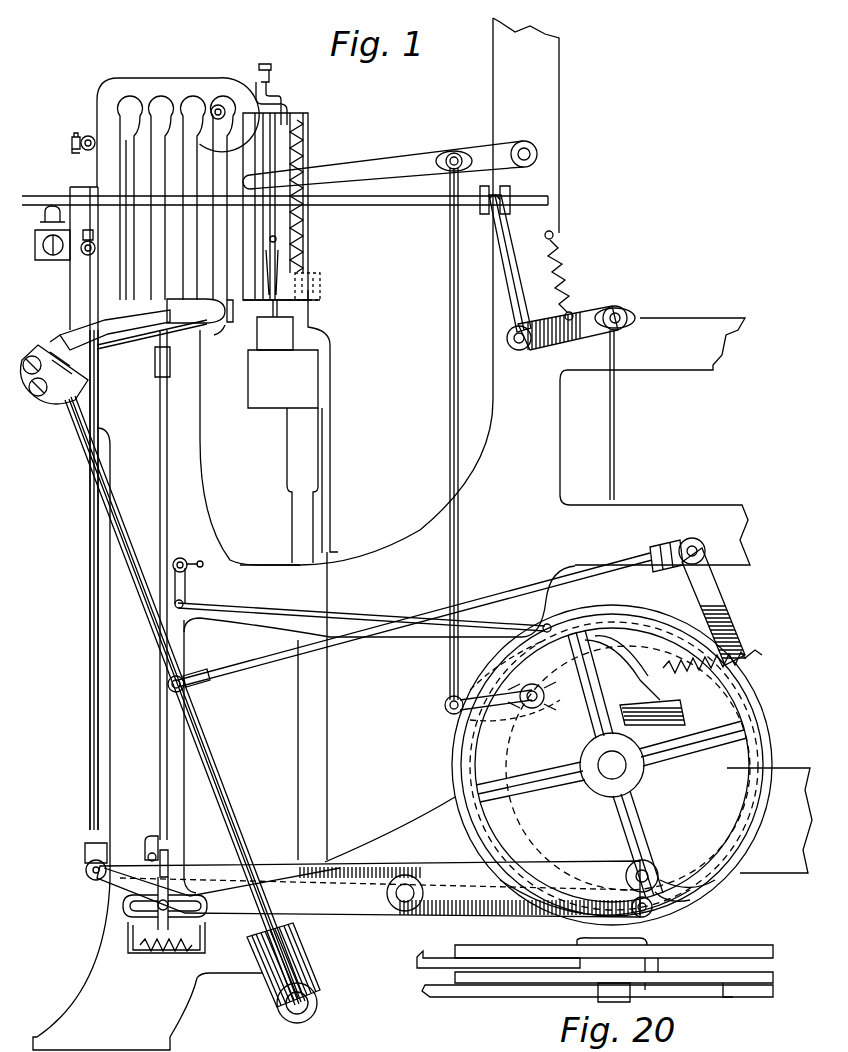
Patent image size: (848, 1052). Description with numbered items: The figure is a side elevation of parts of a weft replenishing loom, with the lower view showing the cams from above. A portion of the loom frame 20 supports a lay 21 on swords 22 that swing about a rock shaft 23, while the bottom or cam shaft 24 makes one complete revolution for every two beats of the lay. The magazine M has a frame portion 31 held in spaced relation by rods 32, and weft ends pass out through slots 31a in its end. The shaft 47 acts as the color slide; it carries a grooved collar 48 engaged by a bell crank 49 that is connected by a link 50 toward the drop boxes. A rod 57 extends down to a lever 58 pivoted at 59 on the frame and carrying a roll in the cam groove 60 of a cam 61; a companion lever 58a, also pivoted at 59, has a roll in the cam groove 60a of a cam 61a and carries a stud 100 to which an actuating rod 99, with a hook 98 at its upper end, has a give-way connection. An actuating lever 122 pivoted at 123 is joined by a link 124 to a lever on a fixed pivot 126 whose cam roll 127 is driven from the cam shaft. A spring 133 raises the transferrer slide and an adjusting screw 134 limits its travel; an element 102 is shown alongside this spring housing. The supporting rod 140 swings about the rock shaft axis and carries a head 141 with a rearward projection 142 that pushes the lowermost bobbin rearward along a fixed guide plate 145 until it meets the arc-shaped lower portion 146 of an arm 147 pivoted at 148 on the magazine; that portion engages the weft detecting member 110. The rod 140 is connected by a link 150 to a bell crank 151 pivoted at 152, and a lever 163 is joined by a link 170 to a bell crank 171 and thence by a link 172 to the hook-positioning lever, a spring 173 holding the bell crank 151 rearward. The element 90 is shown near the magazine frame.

In FIG. 1, the loom frame 20 is at (380, 505).
In FIG. 1, the magazine M is at (129, 84).
In FIG. 1, the arm 147 is at (206, 110).
In FIG. 1, the slots 31a is at (128, 284).
In FIG. 1, the frame portion 31 is at (86, 136).
In FIG. 1, the rods 32 is at (80, 150).
In FIG. 1, the pivot 148 is at (222, 106).
In FIG. 1, the adjusting screw 134 is at (278, 82).
In FIG. 1, the spring 133 is at (302, 260).
In FIG. 1, the rod 102 is at (276, 240).
In FIG. 1, the weft detecting member 110 is at (305, 302).
In FIG. 1, the lay 21 is at (285, 431).
In FIG. 1, the actuating lever 122 is at (376, 170).
In FIG. 1, the pivot 123 is at (524, 152).
In FIG. 1, the shaft 47 is at (387, 201).
In FIG. 1, the grooved collar 48 is at (510, 196).
In FIG. 1, the bell crank 49 is at (512, 292).
In FIG. 1, the link 50 is at (615, 424).
In FIG. 1, the link 124 is at (450, 374).
In FIG. 1, the fixed pivot 126 is at (520, 682).
In FIG. 1, the cam shaft 24 is at (606, 763).
In FIG. 1, the cam 61 is at (757, 700).
In FIG. 1, the pivot 152 is at (758, 736).
In FIG. 1, the cam roll 127 is at (613, 676).
In FIG. 1, the lever 163 is at (668, 704).
In FIG. 1, the spring 173 is at (750, 658).
In FIG. 1, the link 170 is at (305, 608).
In FIG. 1, the bell crank 171 is at (187, 590).
In FIG. 1, the link 172 is at (206, 480).
In FIG. 1, the link 150 is at (252, 660).
In FIG. 1, the supporting rod 140 is at (80, 442).
In FIG. 1, the head 141 is at (50, 342).
In FIG. 1, the rearward projection 142 is at (70, 326).
In FIG. 1, the fixed guide plate 145 is at (140, 341).
In FIG. 1, the hook 98 is at (167, 311).
In FIG. 1, the arc-shaped lower portion 146 is at (226, 323).
In FIG. 1, the box 90 is at (45, 253).
In FIG. 1, the rod 57 is at (92, 576).
In FIG. 1, the actuating rod 99 is at (160, 479).
In FIG. 1, the stud 100 is at (180, 892).
In FIG. 1, the lever 58 is at (97, 880).
In FIG. 20, the lever 58 is at (443, 957).
In FIG. 1, the lever 58a is at (278, 890).
In FIG. 20, the lever 58a is at (478, 994).
In FIG. 1, the pivot 59 is at (405, 912).
In FIG. 1, the cam groove 60 is at (690, 906).
In FIG. 20, the cam groove 60 is at (733, 990).
In FIG. 1, the cam groove 60a is at (668, 900).
In FIG. 1, the cam 61a is at (705, 884).
In FIG. 1, the rock shaft 23 is at (296, 1004).
In FIG. 1, the swords 22 is at (318, 694).
In FIG. 1, the bell crank 151 is at (688, 582).